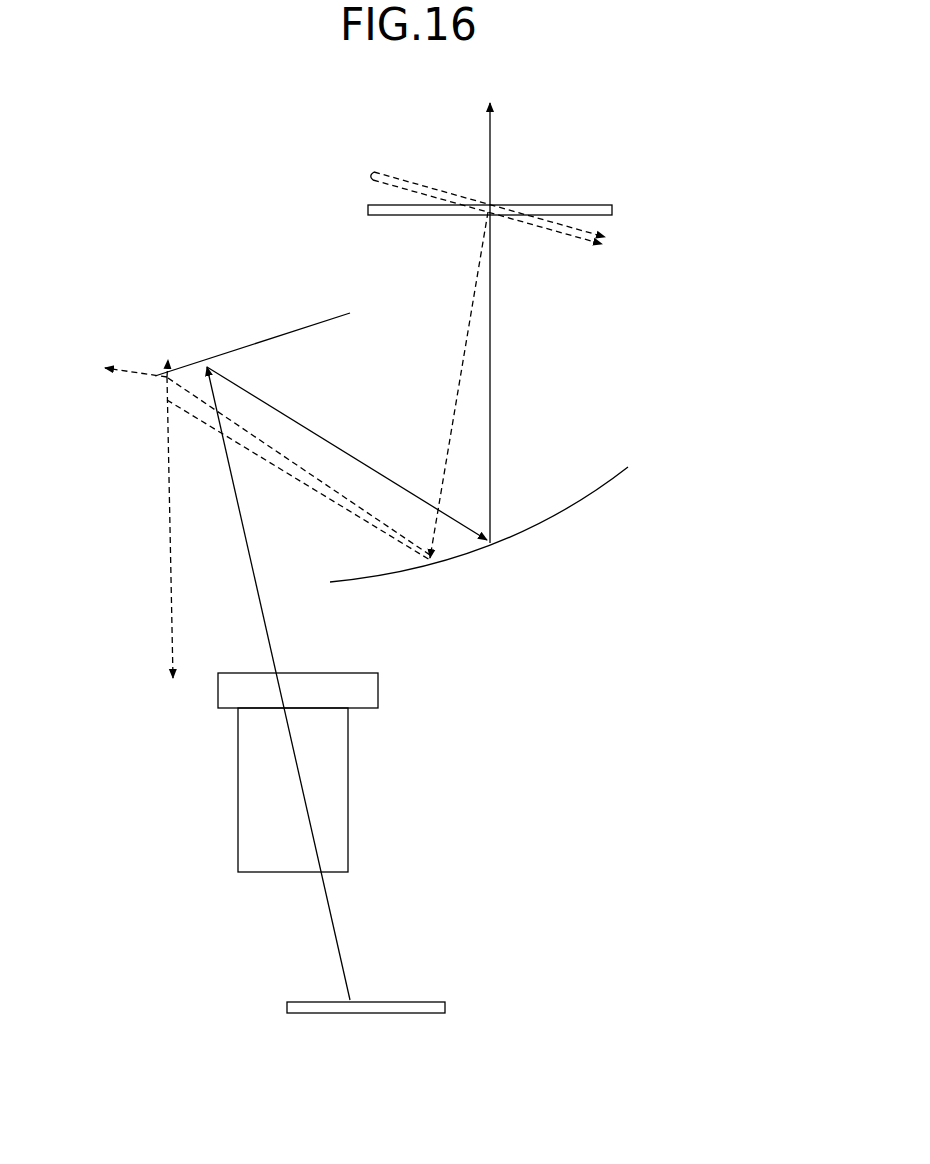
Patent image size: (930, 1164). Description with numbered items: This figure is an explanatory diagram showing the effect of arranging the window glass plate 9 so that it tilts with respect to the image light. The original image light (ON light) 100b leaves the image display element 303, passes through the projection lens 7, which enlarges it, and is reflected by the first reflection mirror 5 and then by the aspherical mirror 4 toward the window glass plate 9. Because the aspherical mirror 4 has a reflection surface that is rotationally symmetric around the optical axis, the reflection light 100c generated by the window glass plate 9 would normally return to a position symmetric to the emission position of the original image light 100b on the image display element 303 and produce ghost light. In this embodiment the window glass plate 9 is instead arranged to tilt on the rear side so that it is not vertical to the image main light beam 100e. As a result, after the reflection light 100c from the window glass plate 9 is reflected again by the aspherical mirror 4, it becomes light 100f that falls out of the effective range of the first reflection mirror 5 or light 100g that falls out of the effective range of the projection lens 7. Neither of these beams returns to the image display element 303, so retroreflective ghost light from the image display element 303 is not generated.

The window glass plate 9 is at (513, 203).
The first reflection mirror 5 is at (297, 328).
The aspherical mirror 4 is at (552, 522).
The projection lens 7 is at (349, 758).
The image display element 303 is at (425, 1013).
The original image light (ON light) 100b is at (335, 923).
The image main light beam 100e is at (491, 312).
The reflection light 100c is at (455, 412).
The light out of the effective range of the first reflection mirror 100f is at (103, 357).
The light out of the effective range of the projection lens 100g is at (143, 535).